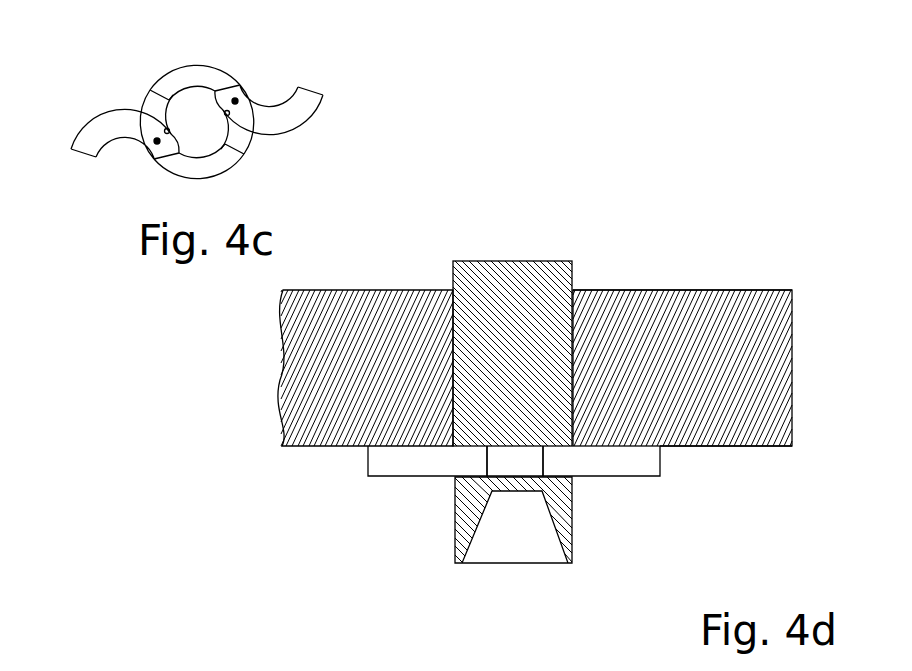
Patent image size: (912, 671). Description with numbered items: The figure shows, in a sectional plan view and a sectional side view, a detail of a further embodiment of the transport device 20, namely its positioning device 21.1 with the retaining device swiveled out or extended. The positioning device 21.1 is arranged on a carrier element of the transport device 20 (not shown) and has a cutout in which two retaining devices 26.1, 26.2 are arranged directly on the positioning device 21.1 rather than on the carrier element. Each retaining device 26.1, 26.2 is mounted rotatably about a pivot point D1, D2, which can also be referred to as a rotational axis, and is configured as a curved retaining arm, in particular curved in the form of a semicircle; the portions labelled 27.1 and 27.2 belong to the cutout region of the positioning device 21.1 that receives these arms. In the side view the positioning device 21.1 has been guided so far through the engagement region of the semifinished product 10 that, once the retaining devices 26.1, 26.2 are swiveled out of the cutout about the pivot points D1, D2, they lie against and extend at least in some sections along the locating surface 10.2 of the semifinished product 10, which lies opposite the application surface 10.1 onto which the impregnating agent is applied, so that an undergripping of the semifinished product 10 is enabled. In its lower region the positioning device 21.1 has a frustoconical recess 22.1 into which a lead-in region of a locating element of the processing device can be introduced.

In FIG. 4D, the semifinished product 10 is at (657, 288).
In FIG. 4D, the application surface 10.1 is at (703, 289).
In FIG. 4D, the locating surface 10.2 is at (707, 447).
In FIG. 4C, the transport device 20 is at (82, 204).
In FIG. 4D, the transport device 20 is at (565, 196).
In FIG. 4C, the positioning device 21.1 is at (241, 137).
In FIG. 4D, the positioning device 21.1 is at (513, 300).
In FIG. 4D, the recess 22.1 is at (532, 553).
In FIG. 4C, the retaining device 26.1 is at (303, 100).
In FIG. 4D, the retaining device 26.1 is at (632, 468).
In FIG. 4C, the retaining device 26.2 is at (100, 132).
In FIG. 4D, the retaining device 26.2 is at (390, 468).
In FIG. 4C, the first clamp half 27.1 is at (173, 78).
In FIG. 4C, the second clamp half 27.2 is at (222, 167).
In FIG. 4D, the second clamp half 27.2 is at (520, 466).
In FIG. 4C, the pivot point D1 is at (238, 98).
In FIG. 4C, the pivot point D2 is at (152, 146).